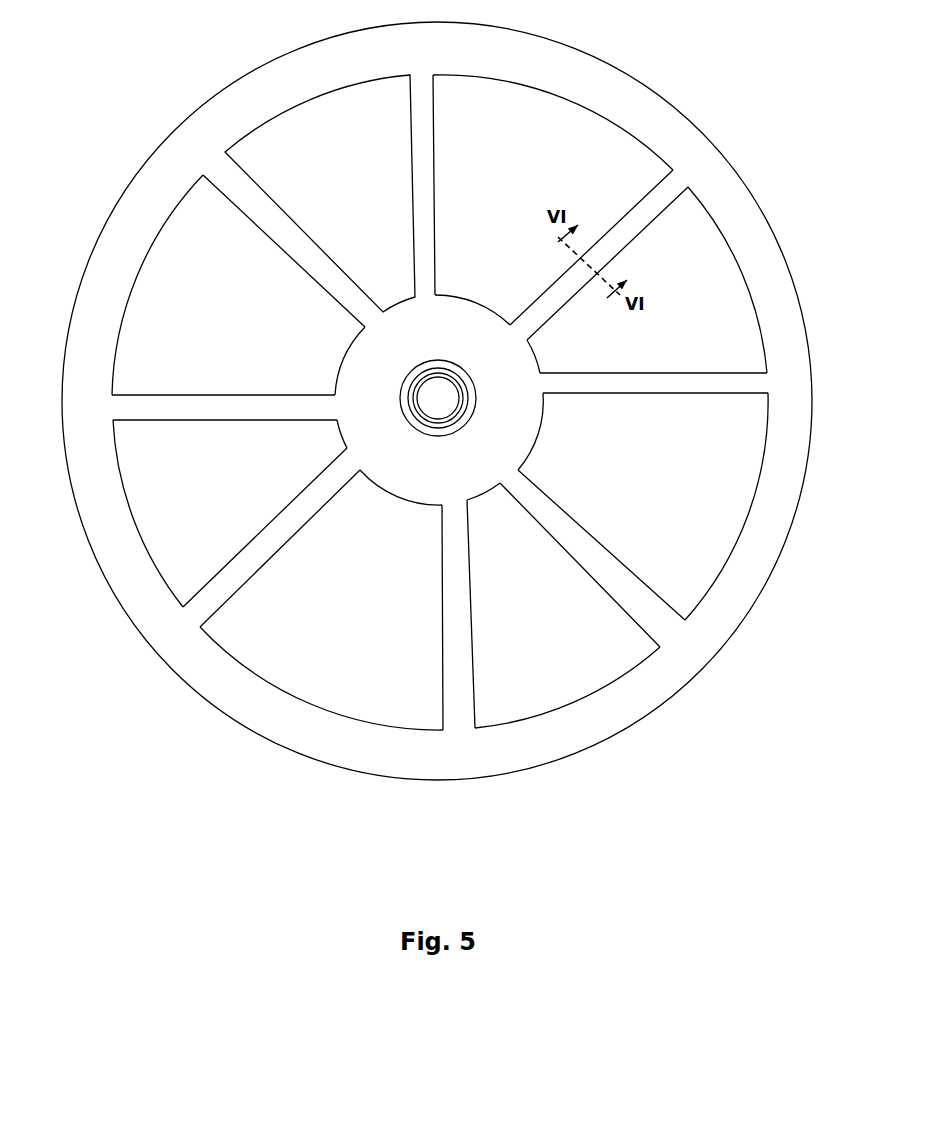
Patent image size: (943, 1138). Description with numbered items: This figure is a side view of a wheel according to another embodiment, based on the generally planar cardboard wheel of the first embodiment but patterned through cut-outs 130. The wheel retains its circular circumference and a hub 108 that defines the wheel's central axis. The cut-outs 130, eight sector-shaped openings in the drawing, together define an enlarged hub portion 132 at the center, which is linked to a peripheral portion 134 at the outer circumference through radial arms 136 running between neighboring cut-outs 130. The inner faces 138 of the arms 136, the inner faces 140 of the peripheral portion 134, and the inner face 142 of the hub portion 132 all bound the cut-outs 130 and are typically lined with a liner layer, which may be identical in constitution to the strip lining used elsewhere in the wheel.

The hub 108 is at (413, 413).
The cut-outs 130 is at (508, 157).
The enlarged hub portion 132 is at (423, 468).
The peripheral portion 134 is at (172, 173).
The radial arms 136 is at (262, 212).
The inner faces of arms 138 is at (408, 147).
The inner faces of peripheral portion 140 is at (153, 243).
The inner face of hub portion 142 is at (343, 360).